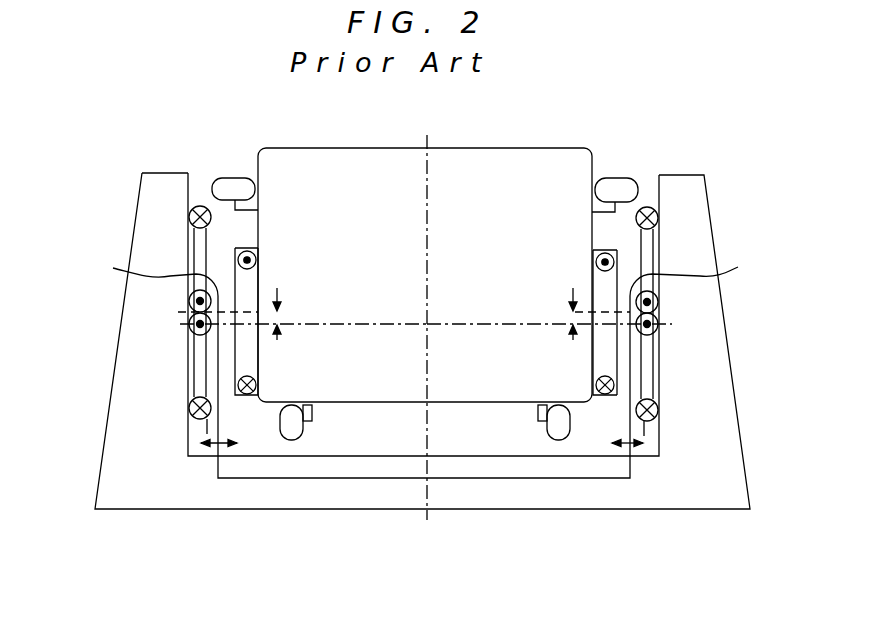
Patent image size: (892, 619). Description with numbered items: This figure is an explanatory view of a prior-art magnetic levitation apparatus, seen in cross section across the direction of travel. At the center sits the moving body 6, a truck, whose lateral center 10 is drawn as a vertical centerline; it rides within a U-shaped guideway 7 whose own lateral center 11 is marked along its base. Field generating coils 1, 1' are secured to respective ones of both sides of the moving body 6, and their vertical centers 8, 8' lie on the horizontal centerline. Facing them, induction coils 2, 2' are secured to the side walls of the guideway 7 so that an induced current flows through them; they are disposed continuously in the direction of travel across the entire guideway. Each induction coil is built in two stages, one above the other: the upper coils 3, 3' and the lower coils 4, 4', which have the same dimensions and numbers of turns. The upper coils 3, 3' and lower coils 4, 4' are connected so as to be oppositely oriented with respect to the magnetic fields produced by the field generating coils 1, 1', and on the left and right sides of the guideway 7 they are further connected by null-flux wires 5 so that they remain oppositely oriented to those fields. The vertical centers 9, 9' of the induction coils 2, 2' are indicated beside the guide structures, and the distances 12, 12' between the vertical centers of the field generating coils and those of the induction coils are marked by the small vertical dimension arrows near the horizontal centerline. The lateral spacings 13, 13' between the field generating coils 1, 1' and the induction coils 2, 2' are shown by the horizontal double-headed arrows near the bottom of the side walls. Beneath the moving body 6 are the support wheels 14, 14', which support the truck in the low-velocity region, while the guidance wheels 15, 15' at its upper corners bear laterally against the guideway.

The field generating coil 1 is at (585, 322).
The field generating coil 1' is at (274, 321).
The induction coil 2 is at (671, 313).
The induction coil 2' is at (178, 311).
The upper coil 3 is at (671, 314).
The upper coil 3' is at (178, 312).
The lower coil 4 is at (673, 314).
The lower coil 4' is at (175, 312).
The null-flux wires 5 is at (485, 478).
The moving body 6 is at (490, 148).
The guideway 7 is at (552, 510).
The vertical center 8 is at (549, 295).
The vertical center 8' is at (303, 295).
The vertical center 9 is at (699, 276).
The vertical center 9' is at (150, 275).
The lateral center 10 is at (427, 203).
The lateral center 11 is at (425, 500).
The distance 12 is at (585, 312).
The distance 12' is at (250, 312).
The lateral spacing 13 is at (628, 432).
The lateral spacing 13' is at (220, 431).
The support wheel 14 is at (528, 423).
The support wheel 14' is at (328, 423).
The guidance wheel 15 is at (615, 162).
The guidance wheel 15' is at (235, 161).